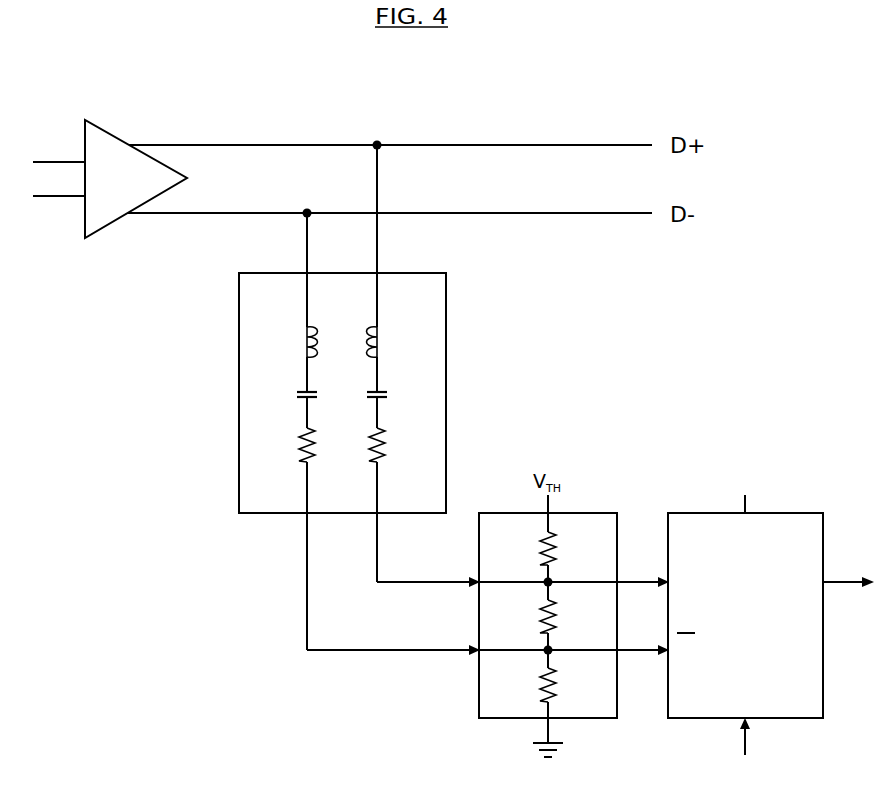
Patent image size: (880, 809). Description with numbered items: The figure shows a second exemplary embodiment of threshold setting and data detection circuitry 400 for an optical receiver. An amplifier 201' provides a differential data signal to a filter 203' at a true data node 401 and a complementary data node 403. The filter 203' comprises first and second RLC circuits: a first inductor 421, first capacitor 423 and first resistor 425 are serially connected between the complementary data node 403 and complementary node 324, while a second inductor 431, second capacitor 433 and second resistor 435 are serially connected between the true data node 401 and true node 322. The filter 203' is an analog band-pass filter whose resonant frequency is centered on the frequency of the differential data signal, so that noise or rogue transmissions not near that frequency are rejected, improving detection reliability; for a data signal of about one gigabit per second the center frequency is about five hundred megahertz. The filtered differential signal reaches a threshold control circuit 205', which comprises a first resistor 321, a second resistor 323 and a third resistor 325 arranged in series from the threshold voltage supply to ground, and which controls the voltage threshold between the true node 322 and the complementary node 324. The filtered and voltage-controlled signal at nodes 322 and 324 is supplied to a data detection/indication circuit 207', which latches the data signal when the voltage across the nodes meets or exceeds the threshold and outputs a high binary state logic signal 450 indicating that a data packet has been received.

The threshold setting and data detection circuitry 400 is at (684, 66).
The amplifier 201' is at (110, 157).
The true data node 401 is at (380, 140).
The complementary data node 403 is at (310, 209).
The filter 203' is at (378, 393).
The first inductor 421 is at (299, 333).
The first capacitor 423 is at (299, 393).
The first resistor 425 is at (299, 455).
The second inductor 431 is at (385, 333).
The second capacitor 433 is at (385, 393).
The second resistor 435 is at (385, 450).
The threshold control circuit 205' is at (507, 615).
The first resistor 321 is at (556, 540).
The true node 322 is at (545, 581).
The second resistor 323 is at (556, 608).
The complementary node 324 is at (545, 649).
The third resistor 325 is at (556, 680).
The data detection/indication circuit 207' is at (756, 625).
The binary state logic signal 450 is at (843, 578).